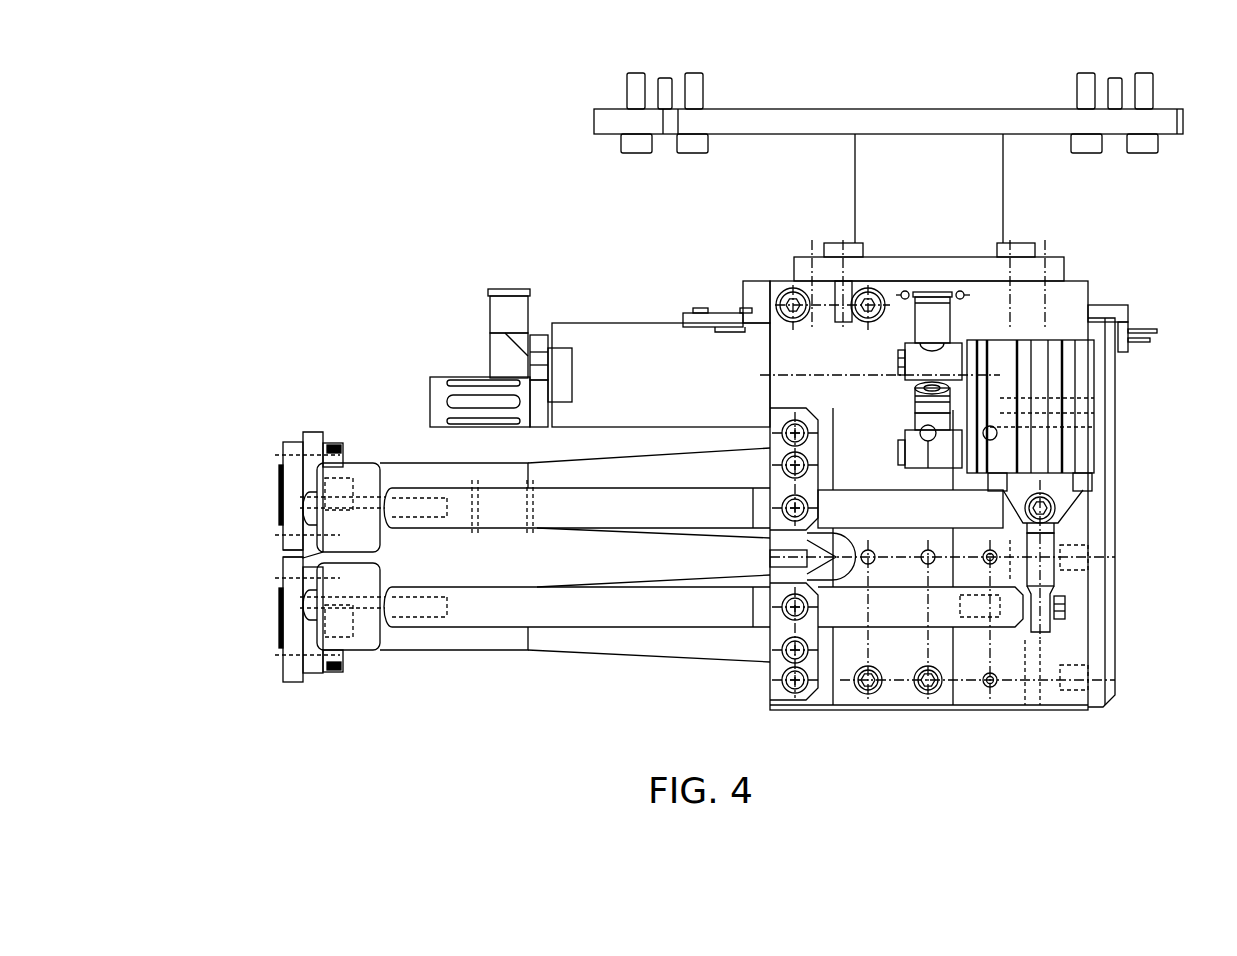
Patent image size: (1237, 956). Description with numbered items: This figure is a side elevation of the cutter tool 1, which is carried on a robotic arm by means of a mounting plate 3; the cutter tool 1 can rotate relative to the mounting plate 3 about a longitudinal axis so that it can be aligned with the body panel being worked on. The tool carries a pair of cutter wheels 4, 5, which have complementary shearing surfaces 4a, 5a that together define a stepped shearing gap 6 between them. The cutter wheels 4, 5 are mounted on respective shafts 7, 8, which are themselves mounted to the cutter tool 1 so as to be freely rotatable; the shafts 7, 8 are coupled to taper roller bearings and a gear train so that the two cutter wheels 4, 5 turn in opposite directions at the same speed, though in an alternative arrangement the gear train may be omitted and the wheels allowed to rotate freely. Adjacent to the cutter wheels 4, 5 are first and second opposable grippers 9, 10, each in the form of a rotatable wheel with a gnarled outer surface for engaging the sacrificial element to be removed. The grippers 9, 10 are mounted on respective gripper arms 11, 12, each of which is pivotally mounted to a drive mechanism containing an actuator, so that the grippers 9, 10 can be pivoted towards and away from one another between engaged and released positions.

The cutter tool 1 is at (373, 178).
The mounting plate 3 is at (912, 120).
The cutter wheel 4 is at (275, 475).
The shearing surface 4a is at (305, 437).
The cutter wheel 5 is at (275, 610).
The shearing surface 5a is at (302, 672).
The stepped shearing gap 6 is at (275, 548).
The shaft 7 is at (693, 467).
The shaft 8 is at (658, 643).
The first gripper 9 is at (345, 480).
The second gripper 10 is at (355, 635).
The gripper arm 11 is at (518, 507).
The gripper arm 12 is at (592, 605).